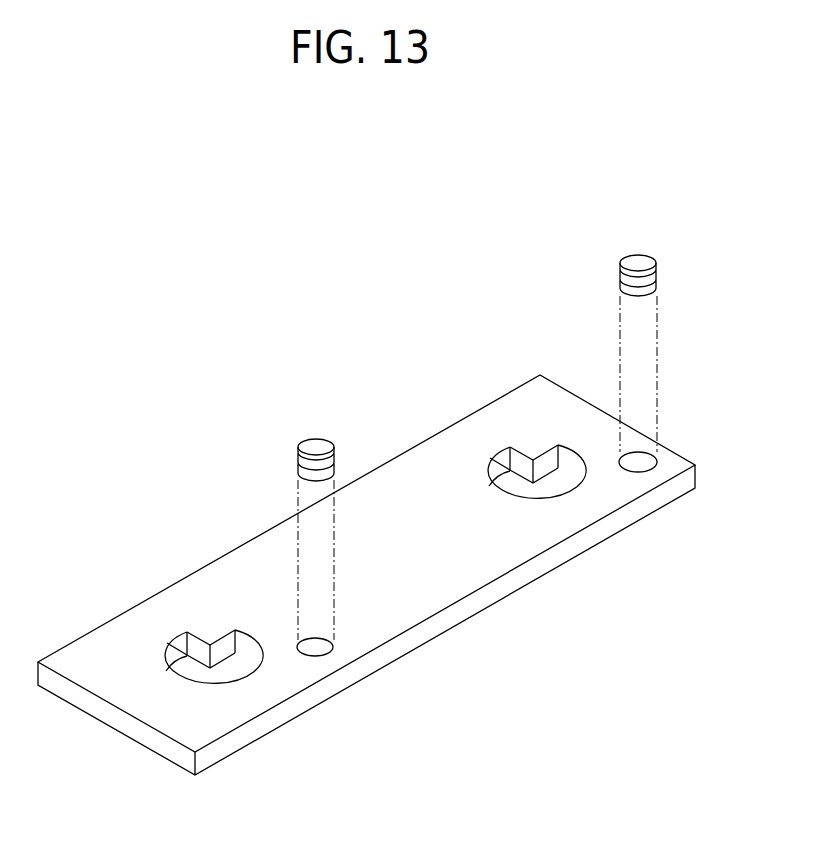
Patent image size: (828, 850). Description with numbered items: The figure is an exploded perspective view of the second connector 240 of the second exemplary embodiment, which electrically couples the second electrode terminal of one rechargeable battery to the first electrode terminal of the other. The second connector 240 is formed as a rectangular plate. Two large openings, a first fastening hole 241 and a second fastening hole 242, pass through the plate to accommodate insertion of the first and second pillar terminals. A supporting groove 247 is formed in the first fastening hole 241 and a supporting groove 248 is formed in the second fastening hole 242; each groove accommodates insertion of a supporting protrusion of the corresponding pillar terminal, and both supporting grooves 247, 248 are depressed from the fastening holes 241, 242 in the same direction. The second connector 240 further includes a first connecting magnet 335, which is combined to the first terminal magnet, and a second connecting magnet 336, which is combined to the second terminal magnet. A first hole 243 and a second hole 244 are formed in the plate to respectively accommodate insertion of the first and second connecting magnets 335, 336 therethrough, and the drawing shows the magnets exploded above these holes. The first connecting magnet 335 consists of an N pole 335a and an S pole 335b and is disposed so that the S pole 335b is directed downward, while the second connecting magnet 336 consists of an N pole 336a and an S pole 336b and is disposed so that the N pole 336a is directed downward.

The second connector 240 is at (391, 434).
The first fastening hole 241 is at (247, 677).
The second fastening hole 242 is at (567, 488).
The first hole 243 is at (314, 647).
The second hole 244 is at (637, 457).
The supporting groove 247 is at (200, 636).
The supporting groove 248 is at (518, 447).
The first connecting magnet 335 is at (244, 533).
The N pole 335a is at (298, 445).
The S pole 335b is at (298, 471).
The second connecting magnet 336 is at (567, 346).
The N pole 336a is at (627, 285).
The S pole 336b is at (633, 262).